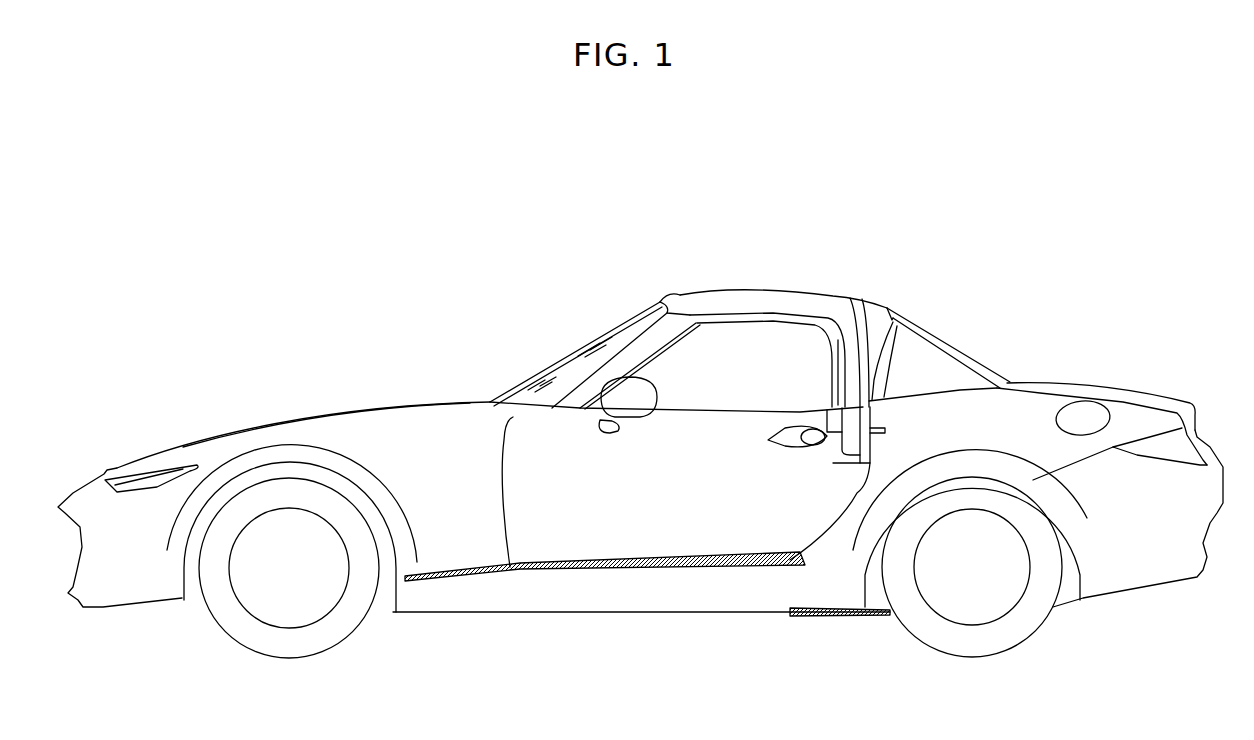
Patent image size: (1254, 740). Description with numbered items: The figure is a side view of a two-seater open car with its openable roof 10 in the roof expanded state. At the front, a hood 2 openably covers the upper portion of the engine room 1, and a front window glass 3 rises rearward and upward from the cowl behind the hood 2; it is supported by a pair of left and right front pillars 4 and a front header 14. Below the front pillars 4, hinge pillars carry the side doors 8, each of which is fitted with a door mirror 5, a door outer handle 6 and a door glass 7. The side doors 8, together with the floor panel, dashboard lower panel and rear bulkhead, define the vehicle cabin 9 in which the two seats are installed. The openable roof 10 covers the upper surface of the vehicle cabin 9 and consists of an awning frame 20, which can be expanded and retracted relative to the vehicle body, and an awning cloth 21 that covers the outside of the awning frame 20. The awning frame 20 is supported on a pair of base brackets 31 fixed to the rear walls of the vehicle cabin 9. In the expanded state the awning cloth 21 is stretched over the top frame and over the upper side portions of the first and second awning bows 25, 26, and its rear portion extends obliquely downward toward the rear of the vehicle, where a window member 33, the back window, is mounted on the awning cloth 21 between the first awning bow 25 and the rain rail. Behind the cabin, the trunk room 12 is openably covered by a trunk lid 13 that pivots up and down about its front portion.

The engine room 1 is at (368, 430).
The hood 2 is at (222, 420).
The front window glass 3 is at (558, 357).
The front pillar 4 is at (643, 345).
The door mirror 5 is at (638, 407).
The door outer handle 6 is at (795, 445).
The door glass 7 is at (742, 379).
The side door 8 is at (716, 512).
The vehicle cabin 9 is at (787, 343).
The openable roof 10 is at (781, 278).
The trunk room 12 is at (1120, 420).
The trunk lid 13 is at (1093, 385).
The front header 14 is at (667, 298).
The awning frame 20 is at (893, 323).
The awning cloth 21 is at (863, 300).
The first awning bow 25 is at (870, 380).
The second awning bow 26 is at (870, 343).
The base bracket 31 is at (835, 460).
The window member 33 is at (960, 343).